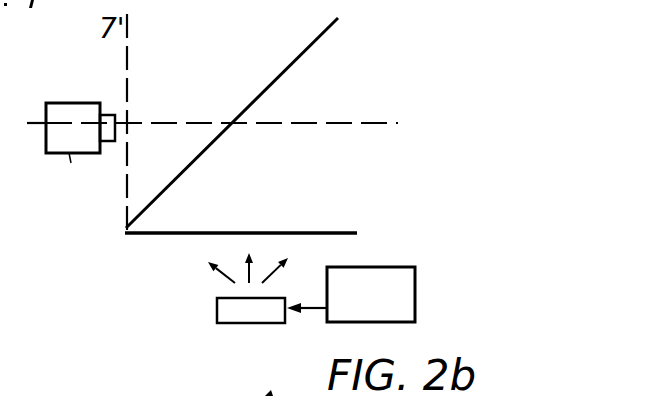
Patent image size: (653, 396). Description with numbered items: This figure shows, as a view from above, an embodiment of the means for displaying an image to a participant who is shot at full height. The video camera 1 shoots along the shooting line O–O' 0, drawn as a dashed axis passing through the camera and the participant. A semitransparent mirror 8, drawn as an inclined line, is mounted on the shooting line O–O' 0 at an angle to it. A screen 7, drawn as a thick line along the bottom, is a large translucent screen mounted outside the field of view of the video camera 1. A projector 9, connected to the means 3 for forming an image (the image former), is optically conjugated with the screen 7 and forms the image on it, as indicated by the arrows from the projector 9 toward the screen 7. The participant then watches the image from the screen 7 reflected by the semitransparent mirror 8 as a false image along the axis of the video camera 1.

The shooting line 0 is at (217, 124).
The video camera 1 is at (89, 102).
The means for forming an image 3 is at (373, 264).
The screen 7 is at (318, 230).
The semitransparent mirror 8 is at (232, 114).
The projector 9 is at (225, 308).